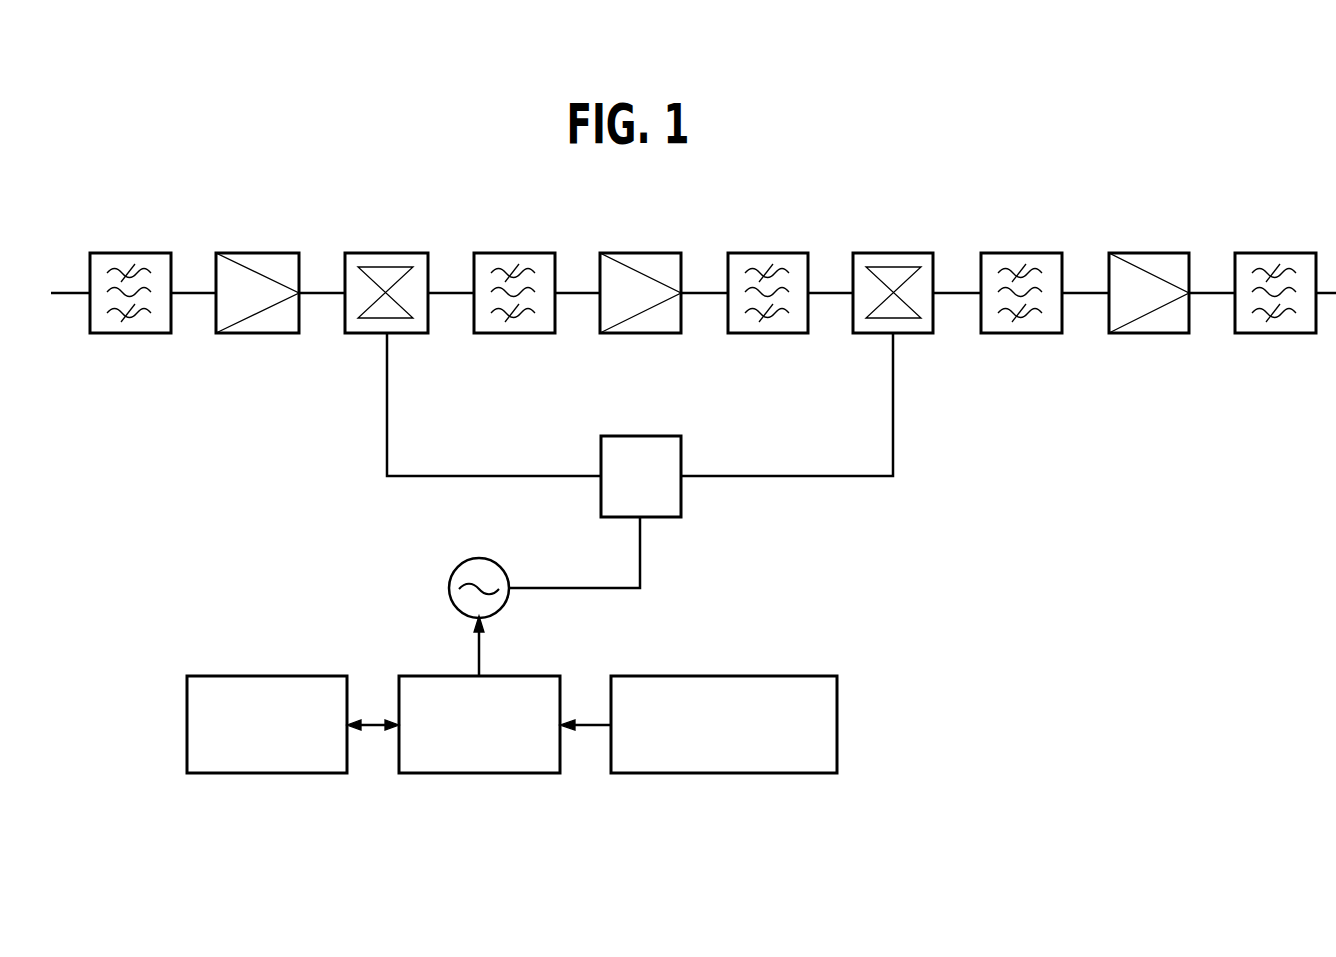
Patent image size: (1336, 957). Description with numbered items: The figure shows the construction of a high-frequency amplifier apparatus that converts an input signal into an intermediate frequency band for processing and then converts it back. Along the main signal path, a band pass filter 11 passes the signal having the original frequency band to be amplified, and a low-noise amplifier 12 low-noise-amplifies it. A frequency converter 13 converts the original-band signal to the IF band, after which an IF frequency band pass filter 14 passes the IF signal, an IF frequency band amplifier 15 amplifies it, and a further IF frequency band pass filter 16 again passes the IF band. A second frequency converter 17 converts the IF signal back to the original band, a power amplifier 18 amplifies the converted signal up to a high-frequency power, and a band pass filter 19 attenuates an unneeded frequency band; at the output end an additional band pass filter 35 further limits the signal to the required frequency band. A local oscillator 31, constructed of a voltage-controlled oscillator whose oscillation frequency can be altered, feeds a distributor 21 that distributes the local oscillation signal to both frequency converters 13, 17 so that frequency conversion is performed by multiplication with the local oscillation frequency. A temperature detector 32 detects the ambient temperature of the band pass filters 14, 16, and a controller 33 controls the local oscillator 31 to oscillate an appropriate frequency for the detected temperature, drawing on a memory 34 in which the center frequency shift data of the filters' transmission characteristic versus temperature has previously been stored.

The band pass filter 11 is at (115, 253).
The low-noise amplifier 12 is at (252, 253).
The frequency converter 13 is at (378, 253).
The IF frequency band pass filter 14 is at (508, 253).
The IF frequency band amplifier 15 is at (655, 253).
The IF frequency band pass filter 16 is at (757, 253).
The frequency converter 17 is at (888, 253).
The power amplifier 18 is at (1007, 253).
The band pass filter 19 is at (1147, 253).
The band pass filter 35 is at (1268, 253).
The distributor 21 is at (640, 436).
The local oscillator 31 is at (483, 558).
The temperature detector 32 is at (640, 676).
The controller 33 is at (517, 676).
The memory 34 is at (270, 676).